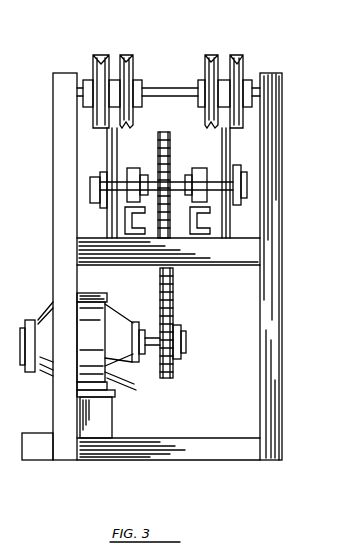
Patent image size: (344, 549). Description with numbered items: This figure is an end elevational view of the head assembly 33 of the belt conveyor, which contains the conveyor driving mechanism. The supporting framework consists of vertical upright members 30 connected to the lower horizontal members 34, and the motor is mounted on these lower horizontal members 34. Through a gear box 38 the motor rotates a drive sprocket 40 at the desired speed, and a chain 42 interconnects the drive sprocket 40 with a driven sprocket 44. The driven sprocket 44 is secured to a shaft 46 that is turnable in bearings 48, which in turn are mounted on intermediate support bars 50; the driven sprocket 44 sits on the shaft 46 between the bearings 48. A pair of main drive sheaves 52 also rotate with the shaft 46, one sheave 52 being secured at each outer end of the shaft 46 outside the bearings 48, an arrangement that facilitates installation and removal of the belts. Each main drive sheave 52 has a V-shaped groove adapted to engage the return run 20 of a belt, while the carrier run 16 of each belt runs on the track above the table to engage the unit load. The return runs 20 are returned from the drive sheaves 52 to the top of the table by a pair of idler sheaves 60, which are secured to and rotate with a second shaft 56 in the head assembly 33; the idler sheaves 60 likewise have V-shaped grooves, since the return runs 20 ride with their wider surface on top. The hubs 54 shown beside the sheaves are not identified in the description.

The carrier run 16 is at (100, 52).
The return run 20 is at (123, 55).
The vertical upright member 30 is at (62, 188).
The head assembly 33 is at (282, 128).
The lower horizontal member 34 is at (250, 447).
The gear box 38 is at (124, 386).
The drive sprocket 40 is at (178, 328).
The chain 42 is at (178, 306).
The driven sprocket 44 is at (150, 130).
The shaft 46 is at (175, 180).
The bearing 48 is at (142, 152).
The intermediate support bar 50 is at (240, 255).
The main drive sheave 52 is at (102, 152).
The hub 54 is at (90, 72).
The shaft 56 is at (172, 99).
The idler sheave 60 is at (137, 76).